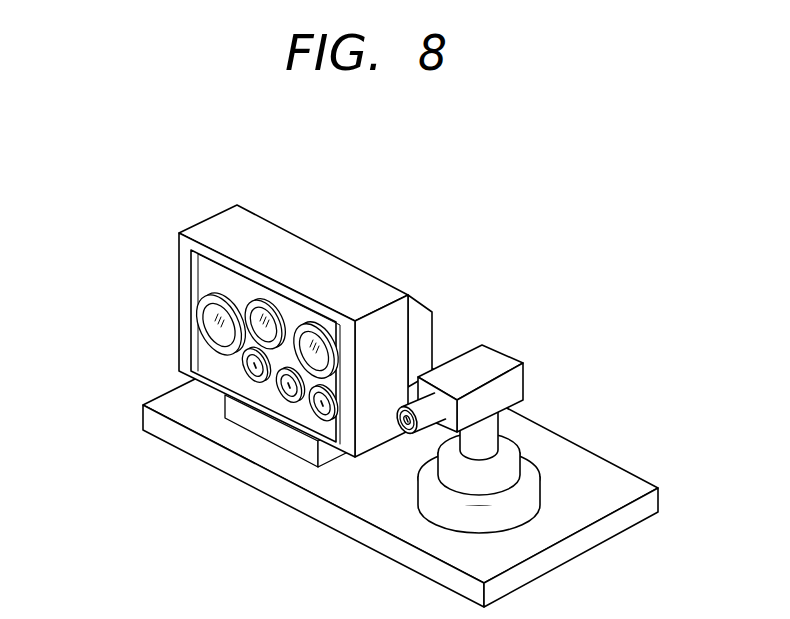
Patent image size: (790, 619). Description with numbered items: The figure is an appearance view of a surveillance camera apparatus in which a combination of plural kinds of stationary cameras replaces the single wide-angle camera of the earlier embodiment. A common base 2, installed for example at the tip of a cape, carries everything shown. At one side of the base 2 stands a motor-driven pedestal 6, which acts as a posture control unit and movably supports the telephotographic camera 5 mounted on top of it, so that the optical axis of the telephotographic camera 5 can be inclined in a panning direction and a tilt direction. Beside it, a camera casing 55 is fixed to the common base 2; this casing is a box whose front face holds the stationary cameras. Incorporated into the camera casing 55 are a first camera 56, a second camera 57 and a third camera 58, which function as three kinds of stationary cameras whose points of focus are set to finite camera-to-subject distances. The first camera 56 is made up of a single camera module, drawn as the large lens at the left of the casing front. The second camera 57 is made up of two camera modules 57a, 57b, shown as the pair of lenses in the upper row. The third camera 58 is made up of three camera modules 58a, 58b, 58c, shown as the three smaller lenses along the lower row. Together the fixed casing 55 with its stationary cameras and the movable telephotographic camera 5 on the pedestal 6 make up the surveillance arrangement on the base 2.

The base 2 is at (606, 461).
The telephotographic camera 5 is at (494, 357).
The motor-driven pedestal 6 is at (510, 442).
The camera casing 55 is at (265, 218).
The first camera 56 is at (207, 321).
The second camera 57 is at (331, 259).
The camera module 57a is at (268, 318).
The camera module 57b is at (320, 346).
The third camera 58 is at (216, 454).
The camera module 58a is at (253, 373).
The camera module 58b is at (288, 392).
The camera module 58c is at (320, 410).